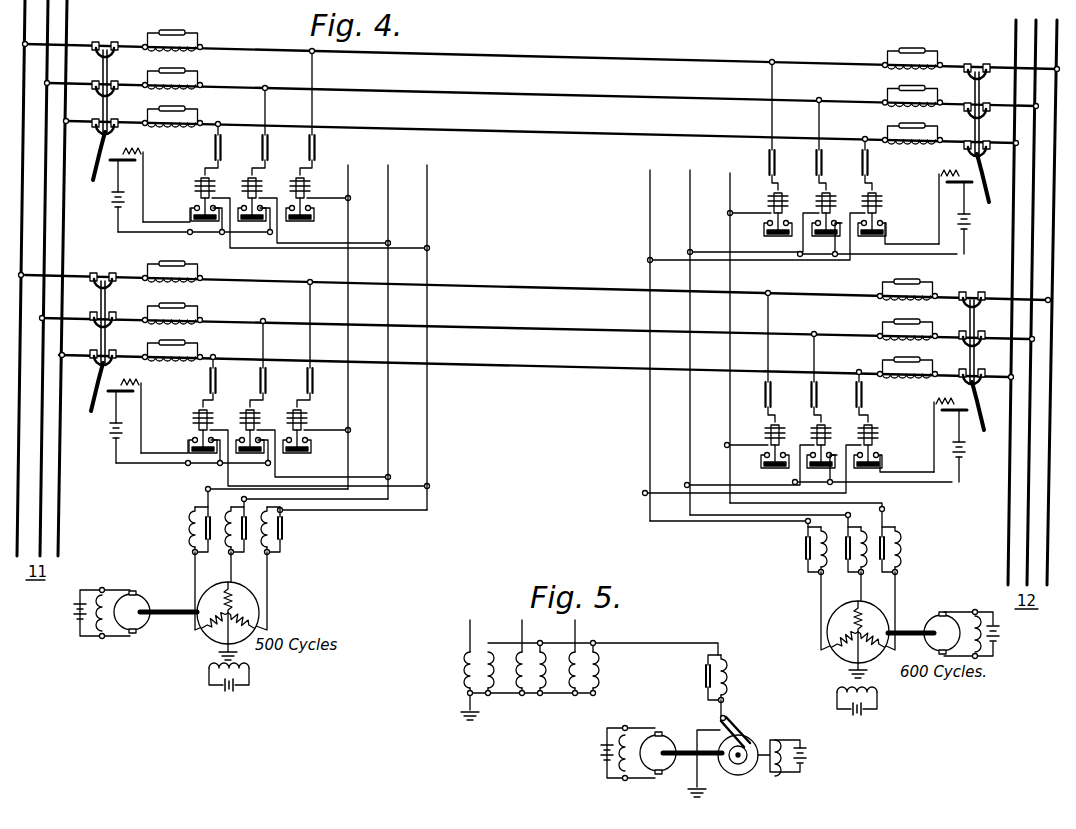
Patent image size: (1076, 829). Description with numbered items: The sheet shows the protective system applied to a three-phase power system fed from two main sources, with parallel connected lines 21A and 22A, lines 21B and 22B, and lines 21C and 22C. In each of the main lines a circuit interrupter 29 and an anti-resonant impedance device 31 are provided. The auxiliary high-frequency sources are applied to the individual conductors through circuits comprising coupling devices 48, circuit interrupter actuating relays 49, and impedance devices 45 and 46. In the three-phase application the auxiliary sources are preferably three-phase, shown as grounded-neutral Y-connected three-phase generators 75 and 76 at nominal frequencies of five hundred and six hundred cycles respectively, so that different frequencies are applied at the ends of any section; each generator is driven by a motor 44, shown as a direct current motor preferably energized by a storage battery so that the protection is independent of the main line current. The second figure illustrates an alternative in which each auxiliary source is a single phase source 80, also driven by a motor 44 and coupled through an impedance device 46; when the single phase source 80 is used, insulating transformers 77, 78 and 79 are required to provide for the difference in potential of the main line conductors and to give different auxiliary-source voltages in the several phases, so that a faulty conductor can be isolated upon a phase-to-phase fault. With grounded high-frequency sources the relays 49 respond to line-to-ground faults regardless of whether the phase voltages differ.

In FIG. 4, the line 21A is at (533, 55).
In FIG. 4, the line 21B is at (533, 94).
In FIG. 4, the line 21C is at (533, 132).
In FIG. 4, the line 22A is at (522, 283).
In FIG. 4, the line 22B is at (522, 330).
In FIG. 4, the line 22C is at (522, 367).
In FIG. 4, the circuit interrupter 29 is at (107, 44).
In FIG. 4, the anti-resonant impedance device 31 is at (200, 30).
In FIG. 4, the motor 44 is at (143, 606).
In FIG. 5, the motor 44 is at (668, 738).
In FIG. 4, the impedance device 45 is at (192, 532).
In FIG. 4, the impedance device 46 is at (808, 565).
In FIG. 5, the impedance device 46 is at (731, 676).
In FIG. 4, the coupling device 48 is at (221, 147).
In FIG. 4, the circuit interrupter actuating relay 49 is at (210, 186).
In FIG. 4, the three-phase generator 75 is at (259, 598).
In FIG. 4, the three-phase generator 76 is at (827, 612).
In FIG. 5, the insulating transformer 77 is at (489, 671).
In FIG. 5, the insulating transformer 78 is at (542, 671).
In FIG. 5, the insulating transformer 79 is at (597, 671).
In FIG. 5, the single phase source 80 is at (748, 738).